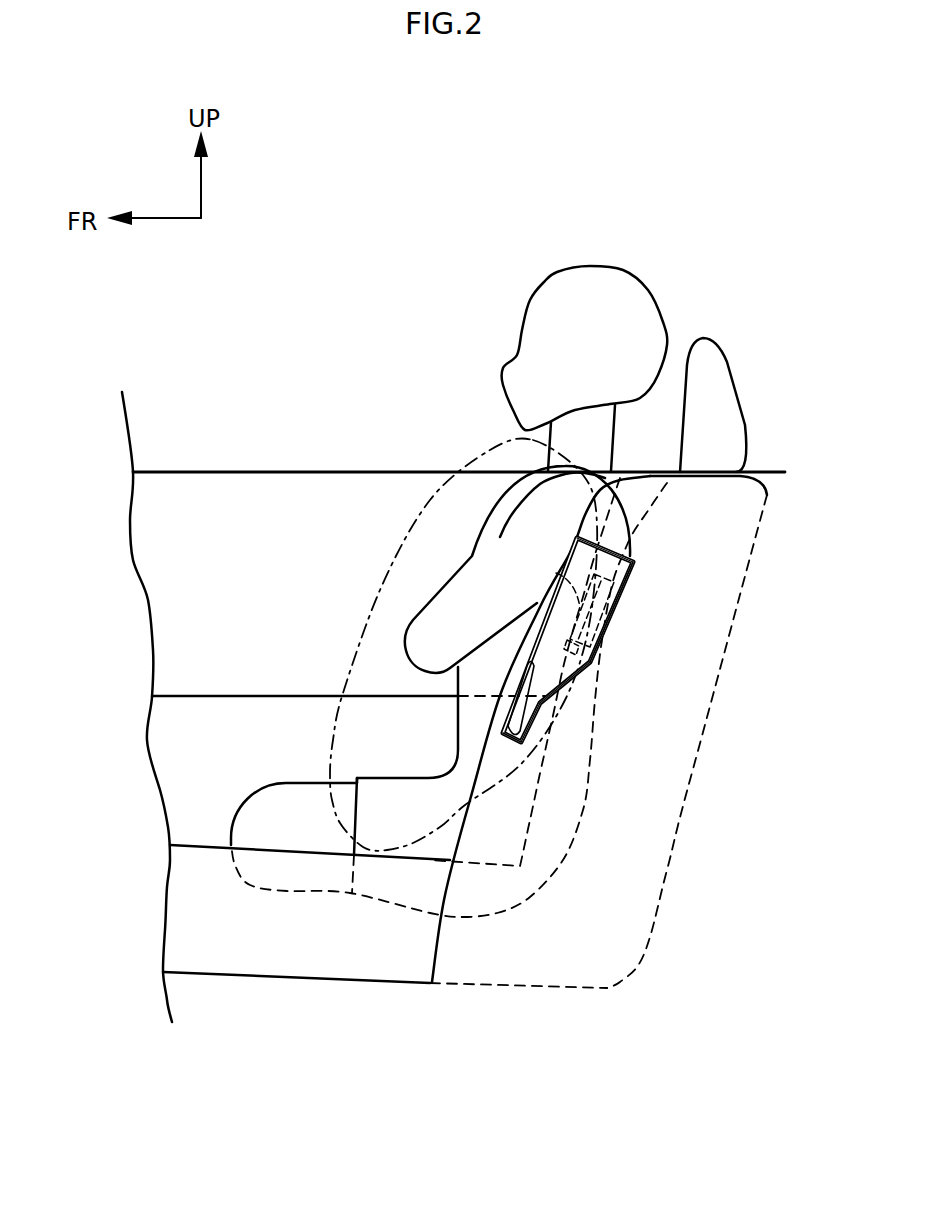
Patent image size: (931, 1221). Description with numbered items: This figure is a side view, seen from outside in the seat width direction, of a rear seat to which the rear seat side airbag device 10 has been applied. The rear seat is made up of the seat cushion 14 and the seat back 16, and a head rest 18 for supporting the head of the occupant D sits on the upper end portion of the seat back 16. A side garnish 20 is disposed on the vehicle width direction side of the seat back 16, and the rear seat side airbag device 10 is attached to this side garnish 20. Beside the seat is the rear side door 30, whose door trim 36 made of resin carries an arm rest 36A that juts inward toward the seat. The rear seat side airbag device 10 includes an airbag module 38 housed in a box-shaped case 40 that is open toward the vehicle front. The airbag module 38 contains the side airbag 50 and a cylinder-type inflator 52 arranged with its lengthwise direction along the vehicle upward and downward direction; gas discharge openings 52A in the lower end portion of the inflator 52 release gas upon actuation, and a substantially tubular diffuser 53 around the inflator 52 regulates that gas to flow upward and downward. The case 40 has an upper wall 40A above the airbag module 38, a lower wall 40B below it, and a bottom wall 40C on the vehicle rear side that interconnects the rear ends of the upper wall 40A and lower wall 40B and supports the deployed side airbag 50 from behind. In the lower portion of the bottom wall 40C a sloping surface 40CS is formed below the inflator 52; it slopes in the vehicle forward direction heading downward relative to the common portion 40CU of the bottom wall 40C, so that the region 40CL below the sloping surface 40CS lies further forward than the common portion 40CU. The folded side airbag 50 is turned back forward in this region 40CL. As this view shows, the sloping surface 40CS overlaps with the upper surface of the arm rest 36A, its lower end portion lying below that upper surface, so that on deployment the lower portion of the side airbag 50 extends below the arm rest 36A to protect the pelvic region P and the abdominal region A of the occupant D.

The rear seat side airbag device 10 is at (655, 567).
The seat cushion 14 is at (287, 978).
The seat back 16 is at (665, 867).
The head rest 18 is at (733, 372).
The side garnish 20 is at (537, 968).
The rear side door 30 is at (237, 472).
The door trim 36 is at (202, 695).
The arm rest 36A is at (348, 643).
The airbag module 38 is at (637, 563).
The case 40 is at (618, 627).
The upper wall 40A is at (617, 500).
The lower wall 40B is at (506, 747).
The bottom wall 40C is at (632, 656).
The common portion 40CU is at (606, 637).
The sloping surface 40CS is at (566, 686).
The region 40CL is at (530, 727).
The side airbag 50 is at (453, 468).
The inflator 52 is at (613, 610).
The gas discharge openings 52A is at (580, 652).
The diffuser 53 is at (573, 610).
The occupant D is at (567, 262).
The abdominal region A is at (472, 717).
The pelvic region P is at (458, 793).